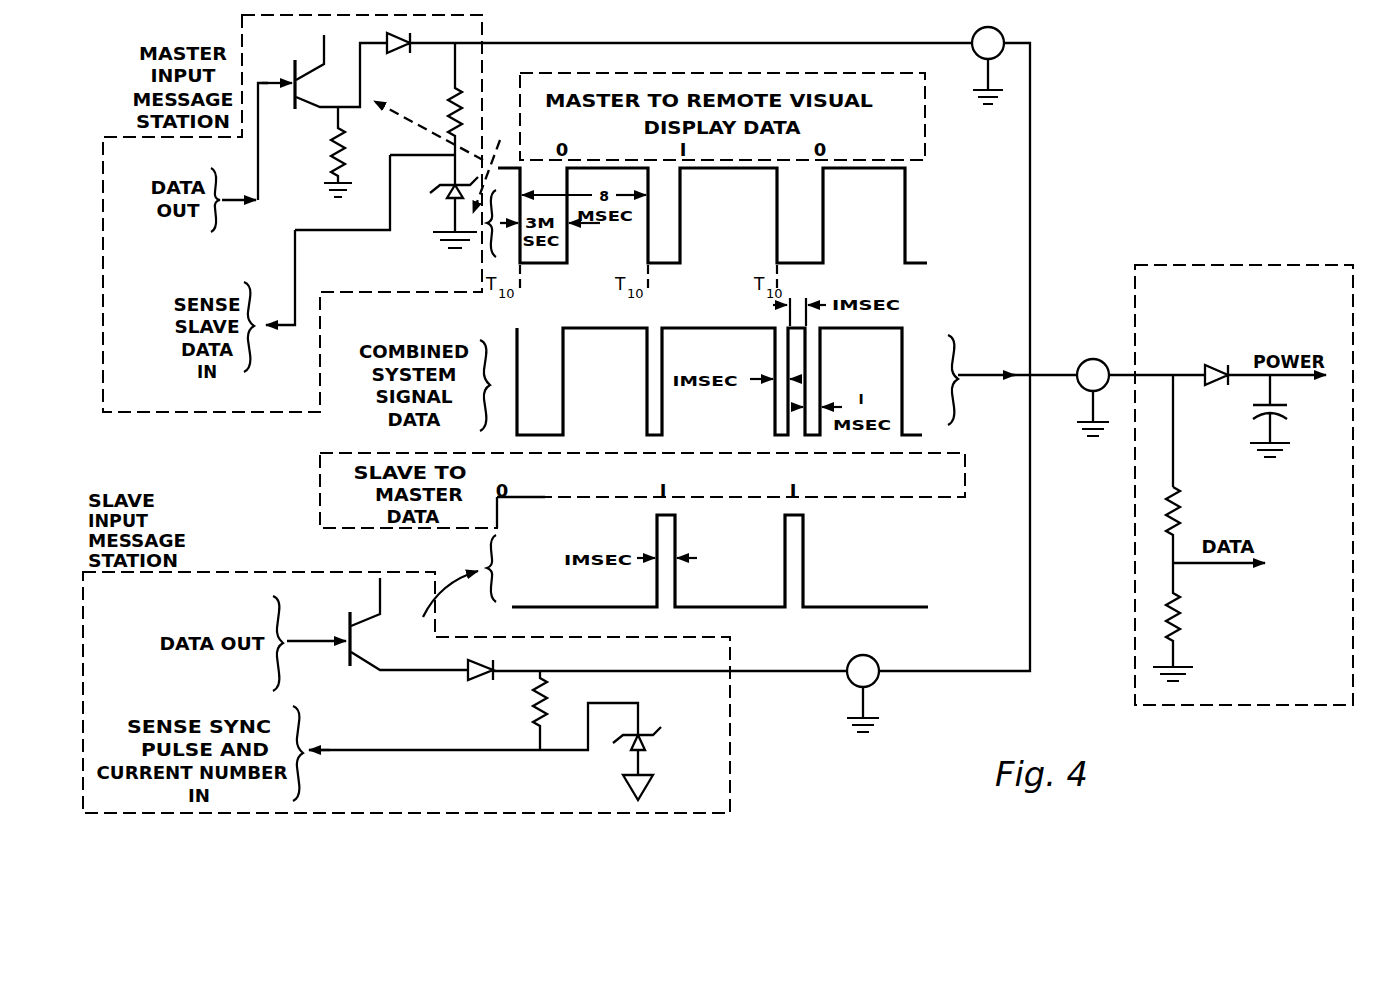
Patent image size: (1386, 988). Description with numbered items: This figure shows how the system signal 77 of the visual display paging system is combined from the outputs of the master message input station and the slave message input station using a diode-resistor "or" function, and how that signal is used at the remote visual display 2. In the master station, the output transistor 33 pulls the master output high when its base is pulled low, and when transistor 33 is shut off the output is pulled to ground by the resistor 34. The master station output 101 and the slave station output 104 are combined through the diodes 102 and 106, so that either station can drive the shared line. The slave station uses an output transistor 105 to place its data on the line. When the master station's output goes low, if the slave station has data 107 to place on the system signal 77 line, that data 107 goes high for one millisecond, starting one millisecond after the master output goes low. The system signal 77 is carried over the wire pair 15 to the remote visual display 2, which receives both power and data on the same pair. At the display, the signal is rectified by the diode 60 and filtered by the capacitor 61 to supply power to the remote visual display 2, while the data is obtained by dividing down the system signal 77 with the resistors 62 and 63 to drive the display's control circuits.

The remote visual display 2 is at (1185, 263).
The wire pair 15 is at (1033, 357).
The transistor 33 is at (303, 75).
The resistor 34 is at (329, 150).
The diode 60 is at (1210, 368).
The capacitor 61 is at (1284, 410).
The resistor 62 is at (1178, 515).
The resistor 63 is at (1178, 620).
The system signal 77 is at (372, 396).
The master station output 101 is at (484, 159).
The diode 102 is at (393, 54).
The slave station output 104 is at (410, 656).
The slave output transistor 105 is at (357, 626).
The diode 106 is at (466, 677).
The slave data 107 is at (784, 545).